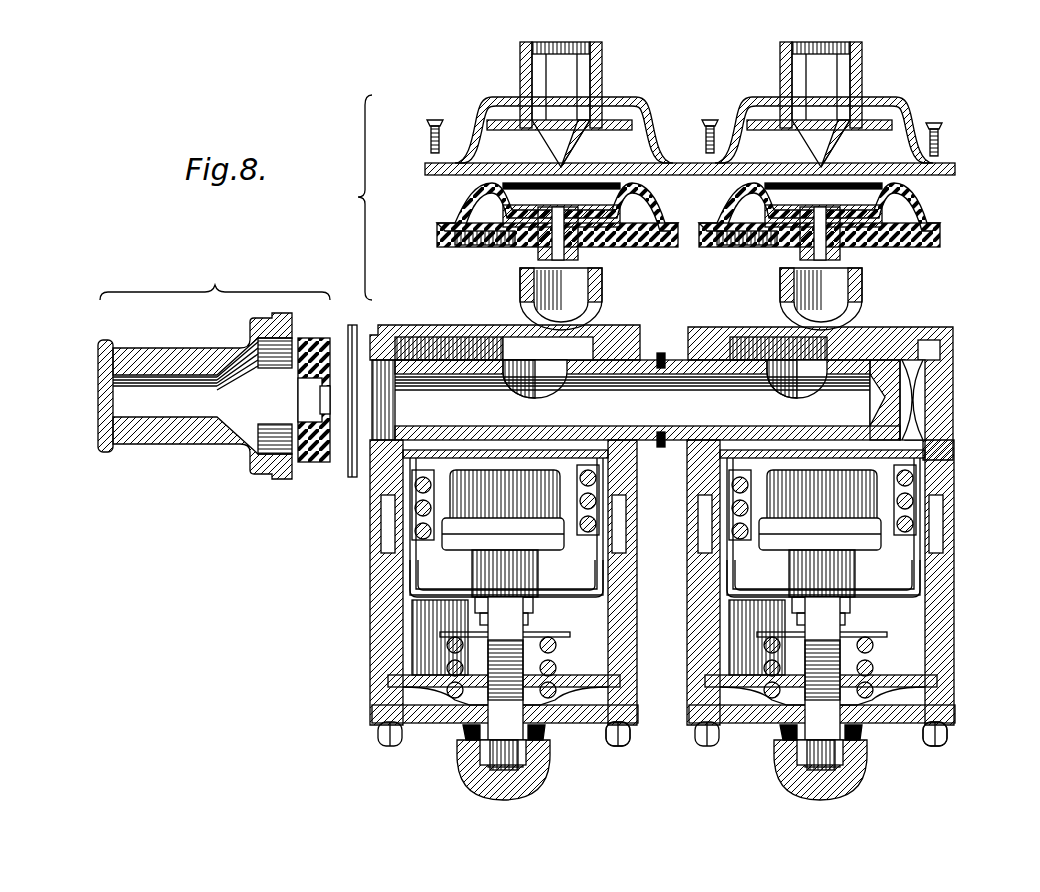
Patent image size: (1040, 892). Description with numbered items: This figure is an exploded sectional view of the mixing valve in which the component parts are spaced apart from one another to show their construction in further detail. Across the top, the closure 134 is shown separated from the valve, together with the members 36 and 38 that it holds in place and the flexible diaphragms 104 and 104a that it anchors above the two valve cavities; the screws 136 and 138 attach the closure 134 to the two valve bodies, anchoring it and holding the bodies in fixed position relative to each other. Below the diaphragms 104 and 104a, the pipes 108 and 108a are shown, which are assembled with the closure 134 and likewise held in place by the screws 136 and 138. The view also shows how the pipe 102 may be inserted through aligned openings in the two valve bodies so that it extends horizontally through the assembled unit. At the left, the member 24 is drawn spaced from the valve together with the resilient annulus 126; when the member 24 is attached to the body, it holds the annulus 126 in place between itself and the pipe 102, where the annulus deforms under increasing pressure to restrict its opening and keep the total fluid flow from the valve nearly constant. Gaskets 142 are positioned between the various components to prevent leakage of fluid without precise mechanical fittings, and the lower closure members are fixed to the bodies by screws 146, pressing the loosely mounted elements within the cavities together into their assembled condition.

The member 24 is at (197, 348).
The resilient annulus 126 is at (313, 338).
The member 36 is at (602, 48).
The member 38 is at (864, 48).
The closure 134 is at (652, 123).
The screw 136 is at (428, 137).
The screw 138 is at (942, 148).
The flexible member 104a is at (455, 229).
The flexible member 104 is at (903, 202).
The pipe 108a is at (603, 292).
The pipe 108 is at (863, 290).
The pipe 102 is at (640, 360).
The gasket 142 is at (660, 353).
The screw 146 is at (622, 745).